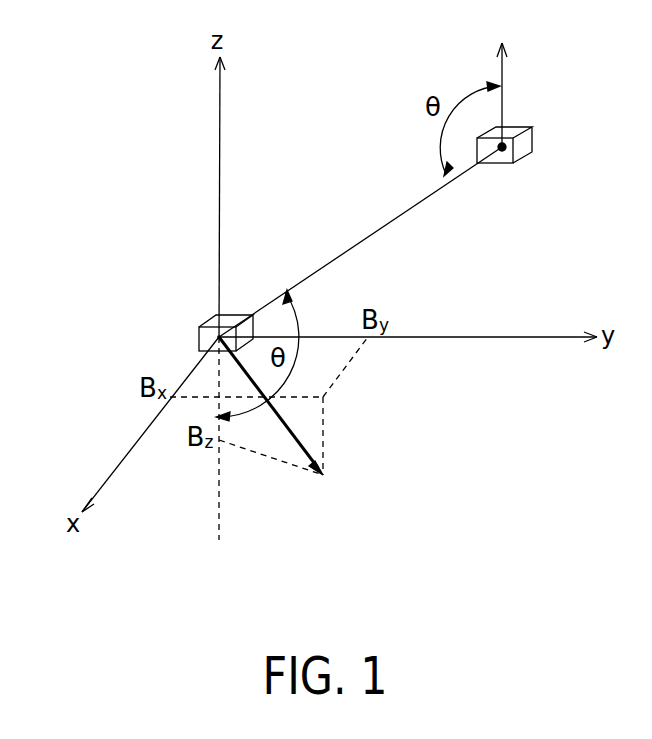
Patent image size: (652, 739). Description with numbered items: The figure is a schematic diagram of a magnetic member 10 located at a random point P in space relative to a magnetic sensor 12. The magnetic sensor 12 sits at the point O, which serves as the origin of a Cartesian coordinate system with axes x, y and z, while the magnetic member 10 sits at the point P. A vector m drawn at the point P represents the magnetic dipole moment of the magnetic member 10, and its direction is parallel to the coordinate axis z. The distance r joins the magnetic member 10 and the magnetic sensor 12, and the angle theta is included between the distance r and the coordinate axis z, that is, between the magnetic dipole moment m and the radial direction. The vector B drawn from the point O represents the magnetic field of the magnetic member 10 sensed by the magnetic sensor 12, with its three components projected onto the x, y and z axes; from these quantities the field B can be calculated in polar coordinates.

The magnetic member 10 is at (532, 135).
The magnetic sensor 12 is at (207, 322).
The point P is at (504, 142).
The point O is at (199, 337).
The magnetic field B is at (352, 477).
The magnetic dipole moment m is at (532, 20).
The distance r is at (360, 242).